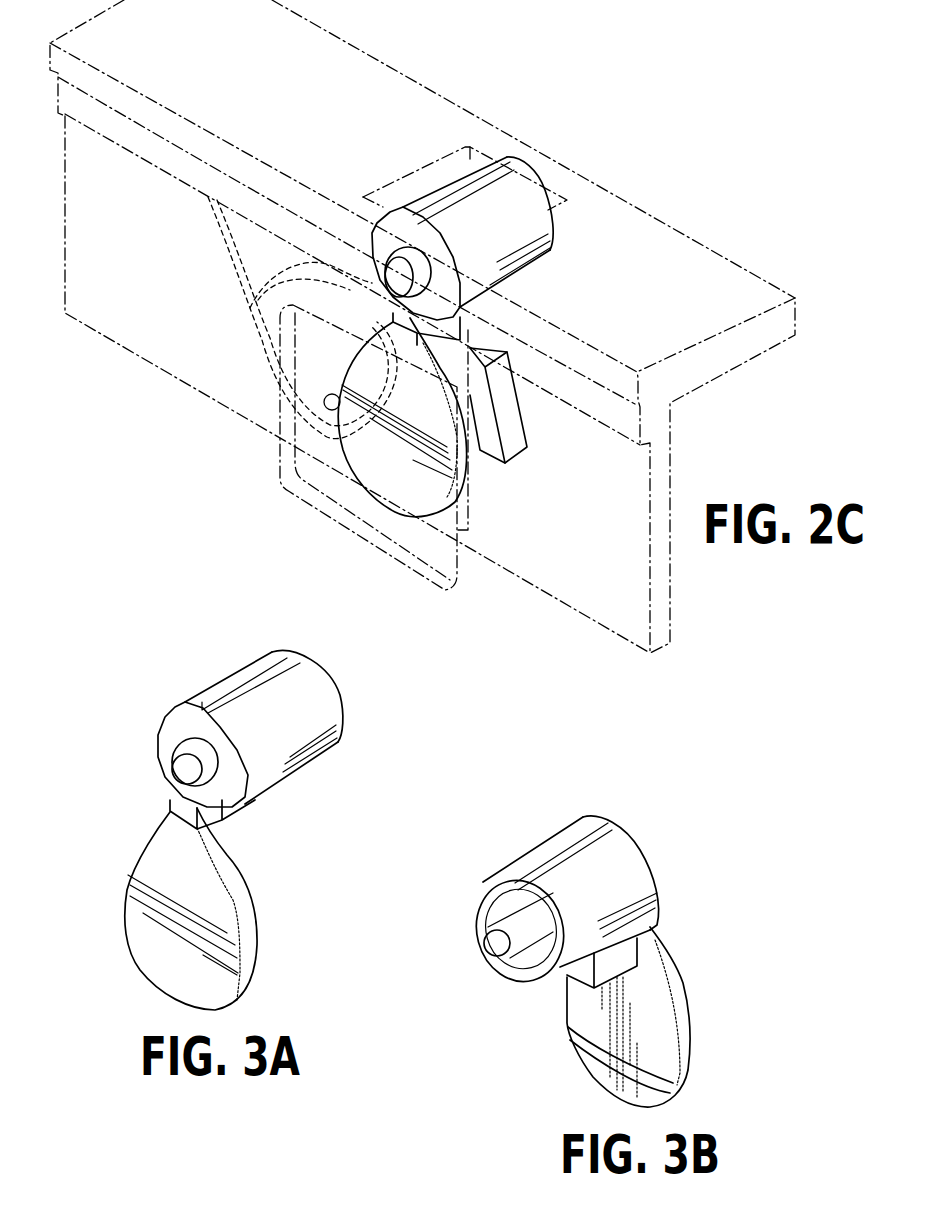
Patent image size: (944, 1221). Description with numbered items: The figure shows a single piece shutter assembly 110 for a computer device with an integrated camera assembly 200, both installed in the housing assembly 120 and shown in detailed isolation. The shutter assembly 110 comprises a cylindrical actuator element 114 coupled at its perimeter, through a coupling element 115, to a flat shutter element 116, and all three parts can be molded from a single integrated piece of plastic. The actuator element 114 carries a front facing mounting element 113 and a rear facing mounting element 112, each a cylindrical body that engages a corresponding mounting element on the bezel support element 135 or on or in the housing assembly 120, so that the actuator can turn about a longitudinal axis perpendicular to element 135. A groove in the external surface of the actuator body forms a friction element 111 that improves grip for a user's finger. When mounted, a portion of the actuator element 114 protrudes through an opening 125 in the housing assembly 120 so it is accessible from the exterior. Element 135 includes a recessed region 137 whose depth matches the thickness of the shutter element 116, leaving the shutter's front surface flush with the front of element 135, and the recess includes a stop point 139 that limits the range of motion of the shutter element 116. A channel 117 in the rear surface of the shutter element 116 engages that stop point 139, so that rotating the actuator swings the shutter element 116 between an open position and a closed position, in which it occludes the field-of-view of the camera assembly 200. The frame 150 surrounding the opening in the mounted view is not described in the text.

In FIG. 2C, the shutter assembly 110 is at (517, 156).
In FIG. 3A, the shutter assembly 110 is at (232, 790).
In FIG. 3B, the shutter assembly 110 is at (590, 930).
In FIG. 3A, the friction element 111 is at (270, 660).
In FIG. 3B, the friction element 111 is at (592, 838).
In FIG. 3A, the rear facing mounting element 112 is at (337, 683).
In FIG. 3B, the rear facing mounting element 112 is at (483, 953).
In FIG. 3A, the front facing mounting element 113 is at (173, 750).
In FIG. 3A, the actuator element 114 is at (158, 713).
In FIG. 3B, the actuator element 114 is at (647, 852).
In FIG. 3A, the coupling element 115 is at (227, 845).
In FIG. 3B, the coupling element 115 is at (647, 973).
In FIG. 3A, the shutter element 116 is at (127, 920).
In FIG. 3B, the shutter element 116 is at (695, 1053).
In FIG. 3B, the channel 117 is at (686, 1090).
In FIG. 2C, the housing assembly 120 is at (663, 233).
In FIG. 2C, the opening 125 is at (423, 177).
In FIG. 2C, the element 135 is at (140, 350).
In FIG. 2C, the recessed region 137 is at (253, 262).
In FIG. 2C, the stop point 139 is at (329, 393).
In FIG. 2C, the frame opening 150 is at (322, 522).
In FIG. 2C, the camera assembly 200 is at (528, 456).